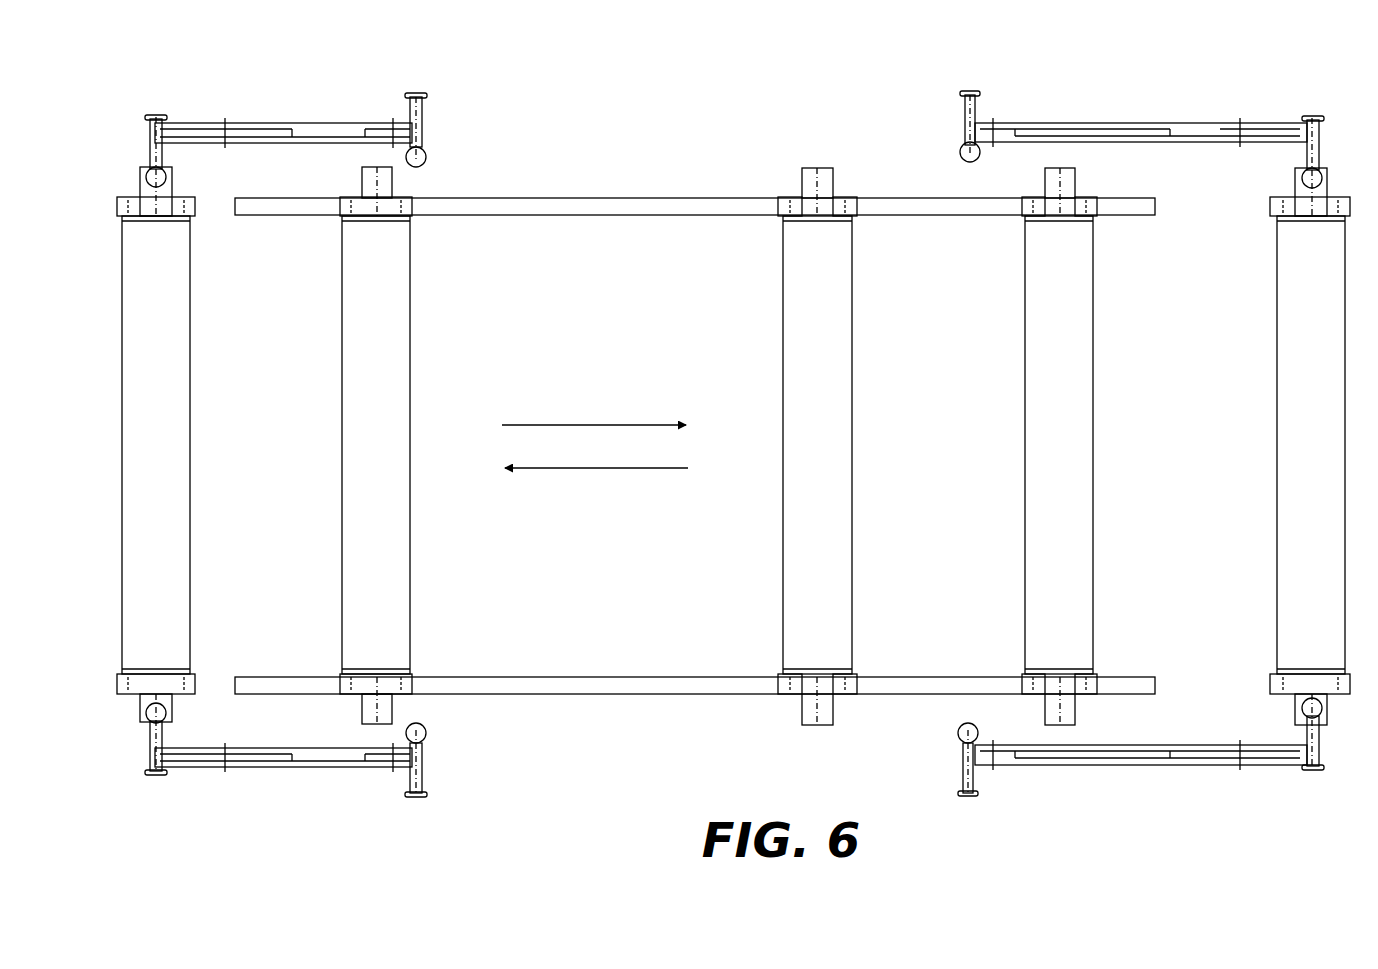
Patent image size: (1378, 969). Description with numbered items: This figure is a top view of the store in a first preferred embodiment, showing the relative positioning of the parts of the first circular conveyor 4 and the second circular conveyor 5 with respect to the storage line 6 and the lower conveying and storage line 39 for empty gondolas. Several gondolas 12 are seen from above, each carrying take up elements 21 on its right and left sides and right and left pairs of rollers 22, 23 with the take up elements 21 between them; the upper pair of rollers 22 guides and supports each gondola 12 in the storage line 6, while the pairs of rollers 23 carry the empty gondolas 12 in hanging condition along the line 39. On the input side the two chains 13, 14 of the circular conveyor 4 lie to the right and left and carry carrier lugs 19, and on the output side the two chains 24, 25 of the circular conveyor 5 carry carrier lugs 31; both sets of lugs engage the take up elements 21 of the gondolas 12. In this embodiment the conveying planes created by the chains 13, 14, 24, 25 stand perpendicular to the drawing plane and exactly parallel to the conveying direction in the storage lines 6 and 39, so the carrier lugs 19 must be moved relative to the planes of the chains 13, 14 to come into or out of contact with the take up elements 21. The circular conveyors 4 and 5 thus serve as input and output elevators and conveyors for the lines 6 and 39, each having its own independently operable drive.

The first circular conveyor 4 is at (305, 449).
The second circular conveyor 5 is at (1111, 442).
The storage line 6 is at (594, 424).
The gondola 12 is at (782, 316).
The chain 13 is at (250, 769).
The chain 14 is at (307, 121).
The carrier lug 19 is at (426, 157).
The take up element 21 is at (385, 182).
The pair of rollers 22 is at (1027, 205).
The pair of rollers 23 is at (1098, 205).
The chain 24 is at (1145, 767).
The chain 25 is at (1130, 121).
The carrier lug 31 is at (960, 152).
The conveying and storage line 39 is at (595, 469).